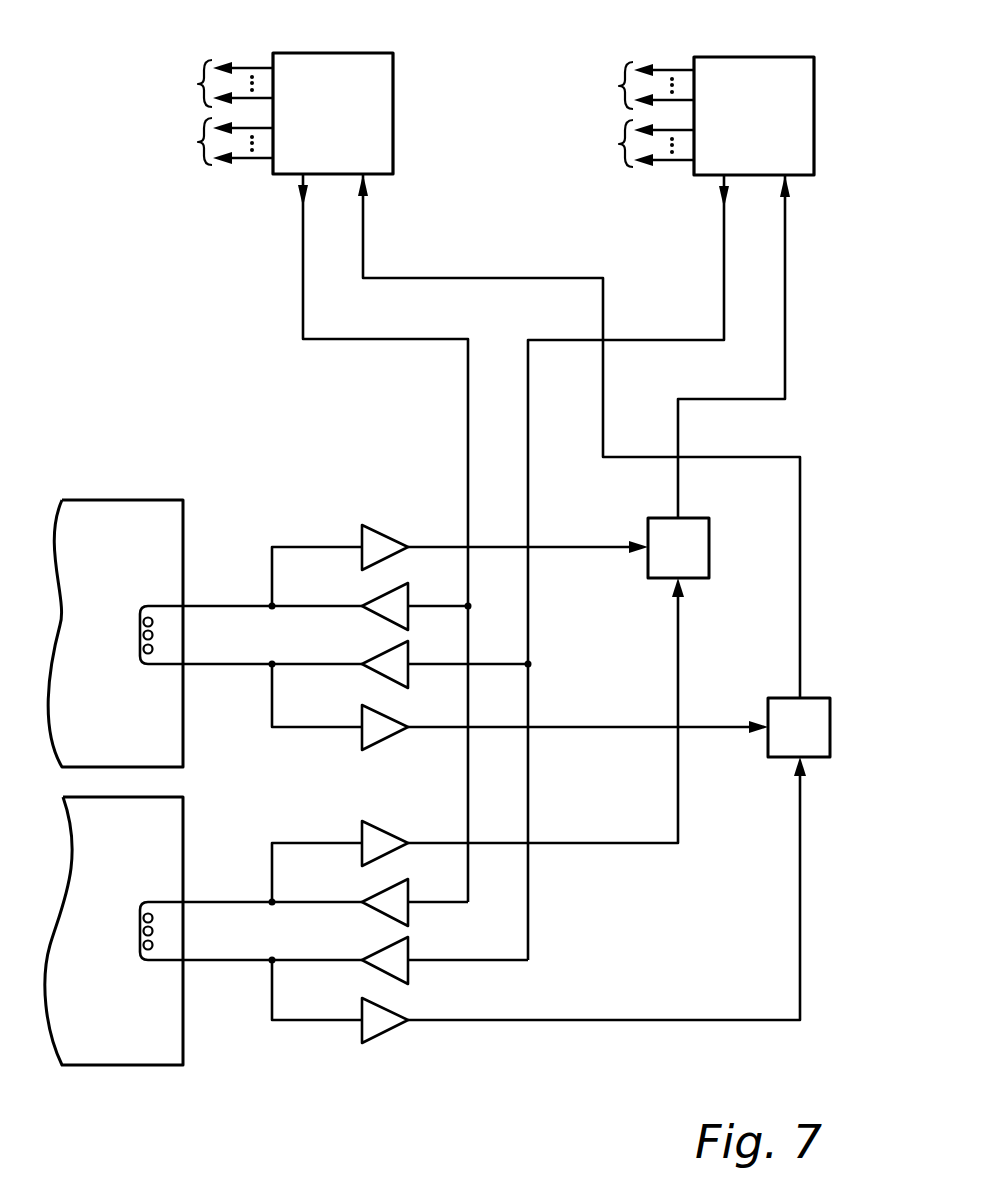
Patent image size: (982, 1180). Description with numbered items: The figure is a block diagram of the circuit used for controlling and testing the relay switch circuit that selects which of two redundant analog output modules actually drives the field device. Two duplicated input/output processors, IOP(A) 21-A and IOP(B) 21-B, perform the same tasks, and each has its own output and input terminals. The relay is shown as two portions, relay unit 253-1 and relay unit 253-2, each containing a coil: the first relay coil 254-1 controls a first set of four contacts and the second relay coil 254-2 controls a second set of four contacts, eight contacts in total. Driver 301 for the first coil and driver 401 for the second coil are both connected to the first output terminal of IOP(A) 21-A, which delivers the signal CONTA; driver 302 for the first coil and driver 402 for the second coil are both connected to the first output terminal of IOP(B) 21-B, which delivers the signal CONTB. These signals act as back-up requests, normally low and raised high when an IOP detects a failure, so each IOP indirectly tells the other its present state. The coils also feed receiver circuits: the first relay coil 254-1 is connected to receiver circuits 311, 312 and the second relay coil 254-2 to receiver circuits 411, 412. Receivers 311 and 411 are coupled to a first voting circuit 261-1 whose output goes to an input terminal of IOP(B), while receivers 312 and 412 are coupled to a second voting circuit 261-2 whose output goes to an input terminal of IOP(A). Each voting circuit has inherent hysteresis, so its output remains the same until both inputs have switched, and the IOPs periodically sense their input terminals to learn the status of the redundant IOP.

The IOP AO(A) 21-A is at (357, 53).
The IOP AO(B) 21-B is at (779, 57).
The relay unit 253-1 is at (172, 536).
The relay unit 253-2 is at (166, 831).
The first relay coil 254-1 is at (150, 666).
The second relay coil 254-2 is at (150, 962).
The first voting circuit 261-1 is at (668, 518).
The second voting circuit 261-2 is at (810, 698).
The driver 301 is at (373, 600).
The driver 302 is at (373, 658).
The receiver circuit 311 is at (366, 529).
The receiver circuit 312 is at (366, 709).
The driver 401 is at (373, 894).
The driver 402 is at (373, 954).
The receiver circuit 411 is at (366, 827).
The receiver circuit 412 is at (366, 1007).